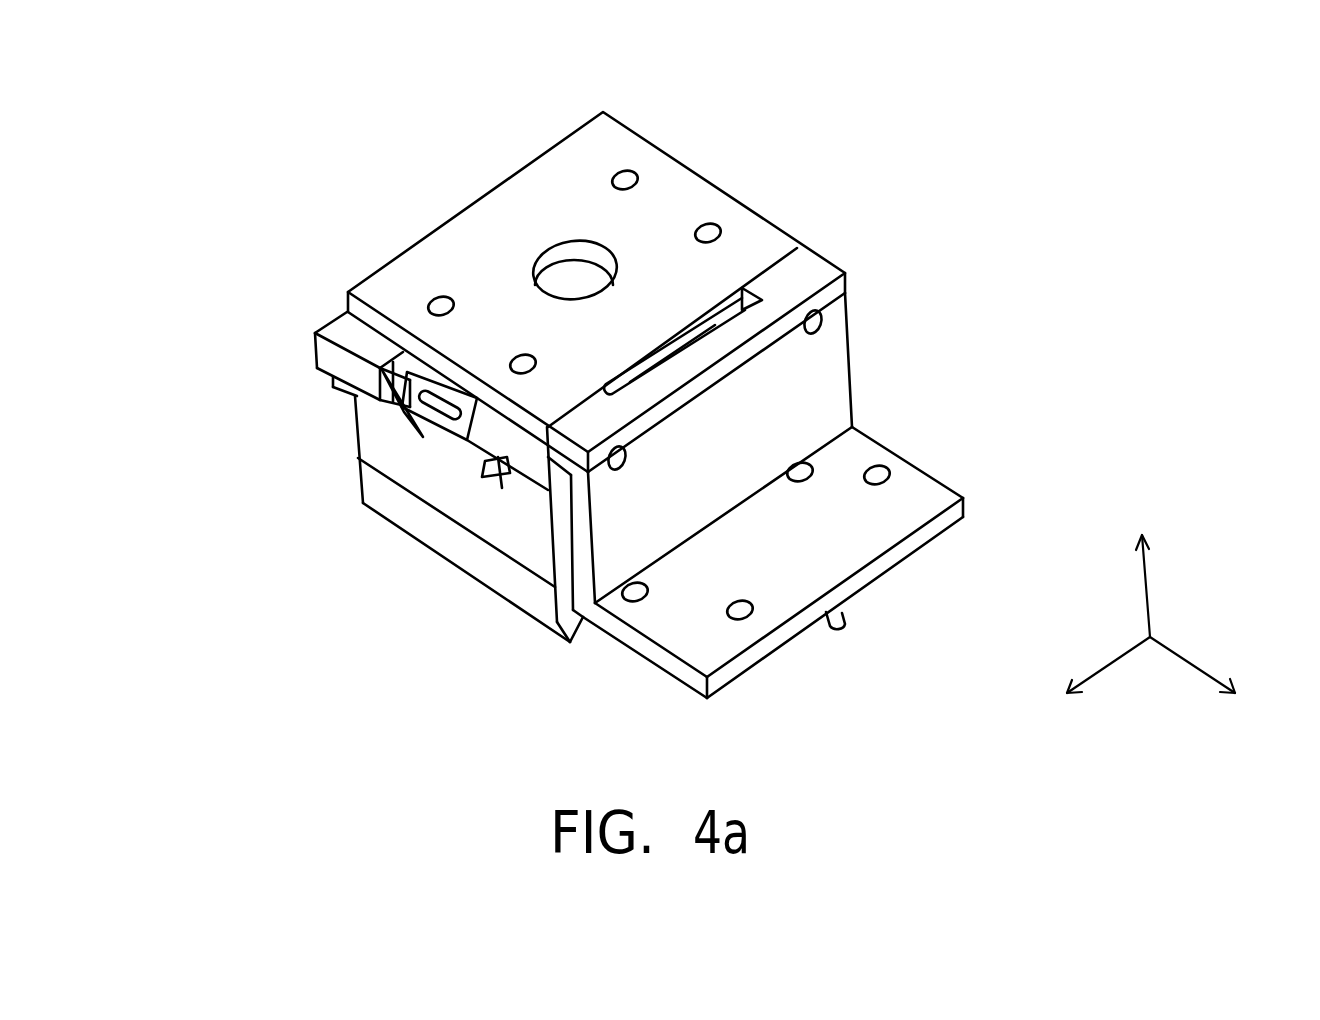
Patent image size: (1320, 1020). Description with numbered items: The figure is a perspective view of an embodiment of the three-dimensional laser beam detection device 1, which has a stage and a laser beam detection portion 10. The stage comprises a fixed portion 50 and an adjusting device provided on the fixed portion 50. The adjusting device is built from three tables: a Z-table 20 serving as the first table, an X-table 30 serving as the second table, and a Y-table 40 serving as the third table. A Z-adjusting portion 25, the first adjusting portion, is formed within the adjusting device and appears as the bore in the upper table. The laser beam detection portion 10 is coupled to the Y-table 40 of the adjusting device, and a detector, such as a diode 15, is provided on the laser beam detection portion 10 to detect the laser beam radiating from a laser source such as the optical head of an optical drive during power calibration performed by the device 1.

The three-dimensional laser beam detection device 1 is at (160, 88).
The laser beam detection portion 10 is at (925, 497).
The diode 15 is at (838, 620).
The Z-table 20 is at (367, 435).
The Z-adjusting portion 25 is at (577, 287).
The X-table 30 is at (540, 495).
The Y-table 40 is at (763, 243).
The fixed portion 50 is at (452, 543).